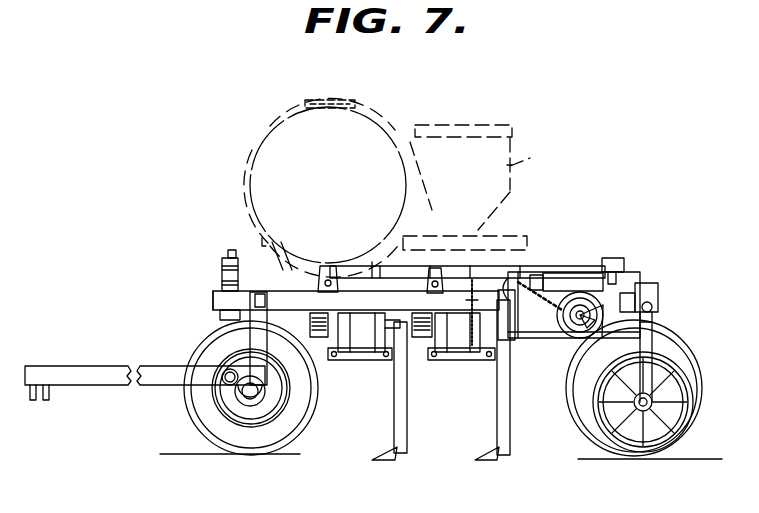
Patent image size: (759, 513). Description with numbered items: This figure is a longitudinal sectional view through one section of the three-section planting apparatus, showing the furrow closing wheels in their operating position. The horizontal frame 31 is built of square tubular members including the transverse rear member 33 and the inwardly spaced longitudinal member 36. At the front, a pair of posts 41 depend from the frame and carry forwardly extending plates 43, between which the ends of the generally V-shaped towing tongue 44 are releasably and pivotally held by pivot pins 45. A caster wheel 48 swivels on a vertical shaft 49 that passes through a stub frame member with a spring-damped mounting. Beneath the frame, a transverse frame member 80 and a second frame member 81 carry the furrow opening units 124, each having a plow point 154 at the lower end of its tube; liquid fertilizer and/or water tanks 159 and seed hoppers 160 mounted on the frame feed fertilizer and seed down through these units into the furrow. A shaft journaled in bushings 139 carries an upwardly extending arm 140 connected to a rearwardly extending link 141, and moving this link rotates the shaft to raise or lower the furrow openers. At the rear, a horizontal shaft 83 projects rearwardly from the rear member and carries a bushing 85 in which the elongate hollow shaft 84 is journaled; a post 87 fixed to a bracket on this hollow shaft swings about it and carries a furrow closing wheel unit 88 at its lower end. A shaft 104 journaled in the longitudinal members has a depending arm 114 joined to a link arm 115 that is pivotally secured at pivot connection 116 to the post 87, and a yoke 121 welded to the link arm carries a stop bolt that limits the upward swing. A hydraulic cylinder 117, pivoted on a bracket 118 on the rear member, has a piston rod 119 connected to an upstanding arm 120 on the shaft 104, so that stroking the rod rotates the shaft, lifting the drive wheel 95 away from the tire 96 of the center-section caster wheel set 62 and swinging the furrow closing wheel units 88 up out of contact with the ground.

The liquid fertilizer and/or water tank 159 is at (264, 143).
The seed hopper 160 is at (513, 165).
The arm 140 is at (330, 262).
The link 141 is at (378, 264).
The bushing 139 is at (427, 286).
The longitudinal member 36 is at (364, 315).
The vertical shaft 49 is at (228, 252).
The frame 31 is at (245, 292).
The towing tongue 44 is at (75, 362).
The post 41 is at (228, 326).
The caster wheel 48 is at (280, 457).
The pivot pin 45 is at (226, 382).
The plate 43 is at (244, 398).
The transverse frame member 80 is at (322, 340).
The second frame member 81 is at (422, 340).
The plow point 154 is at (385, 456).
The furrow opening unit 124 is at (407, 410).
The arm 114 is at (480, 318).
The link arm 115 is at (574, 329).
The shaft 104 is at (537, 323).
The yoke 121 is at (574, 335).
The drive wheel 95 is at (585, 295).
The hydraulic cylinder 117 is at (560, 272).
The piston rod 119 is at (535, 272).
The arm 120 is at (500, 290).
The transverse rear member 33 is at (614, 258).
The bracket 118 is at (630, 288).
The bushing 85 is at (655, 283).
The horizontal shaft 83 is at (660, 292).
The hollow shaft 84 is at (652, 312).
The pivot connection 116 is at (654, 320).
The set of caster wheels 62 is at (693, 331).
The post 87 is at (652, 352).
The tire 96 is at (578, 420).
The furrow closing wheel unit 88 is at (648, 462).